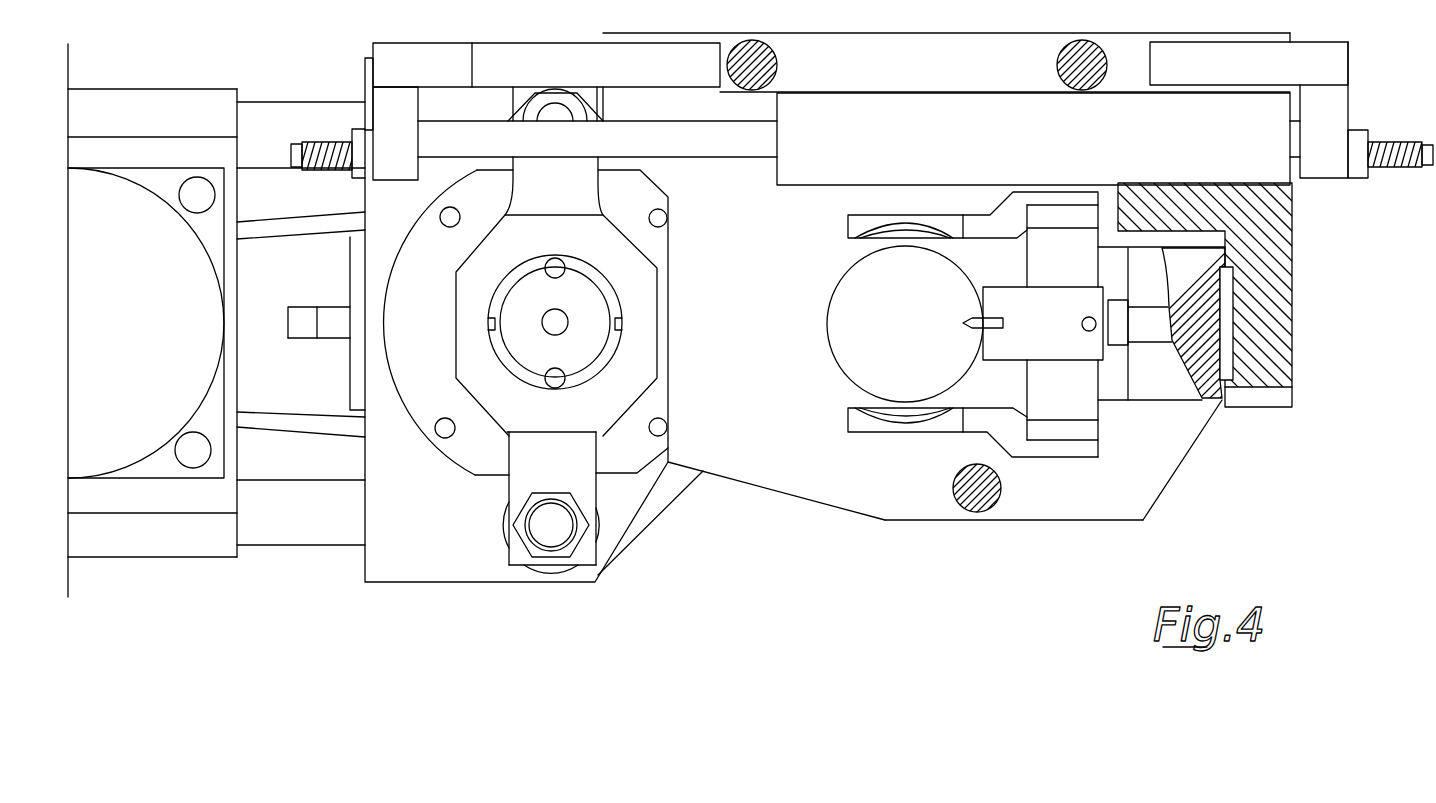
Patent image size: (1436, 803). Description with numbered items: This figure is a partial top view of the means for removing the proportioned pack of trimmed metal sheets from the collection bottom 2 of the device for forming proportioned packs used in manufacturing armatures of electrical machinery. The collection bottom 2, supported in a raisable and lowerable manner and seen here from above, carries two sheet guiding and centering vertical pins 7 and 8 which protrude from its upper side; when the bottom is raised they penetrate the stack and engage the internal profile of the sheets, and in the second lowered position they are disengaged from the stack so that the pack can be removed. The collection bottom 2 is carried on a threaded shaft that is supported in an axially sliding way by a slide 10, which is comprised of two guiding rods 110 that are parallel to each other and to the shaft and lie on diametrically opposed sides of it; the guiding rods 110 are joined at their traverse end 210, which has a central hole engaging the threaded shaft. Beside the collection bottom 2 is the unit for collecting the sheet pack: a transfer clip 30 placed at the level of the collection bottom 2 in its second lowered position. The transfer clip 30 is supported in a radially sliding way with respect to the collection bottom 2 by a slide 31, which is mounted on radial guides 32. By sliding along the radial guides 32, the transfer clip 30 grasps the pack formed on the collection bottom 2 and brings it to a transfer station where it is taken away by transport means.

The collection bottom 2 is at (513, 302).
The sheet guiding and centering vertical pin 7 is at (557, 262).
The sheet guiding and centering vertical pin 8 is at (560, 373).
The slide 10 is at (603, 547).
The guiding rod 110 is at (553, 571).
The traverse end 210 is at (538, 472).
The transfer clip 30 is at (1056, 462).
The slide 31 is at (1298, 342).
The radial guide 32 is at (728, 150).